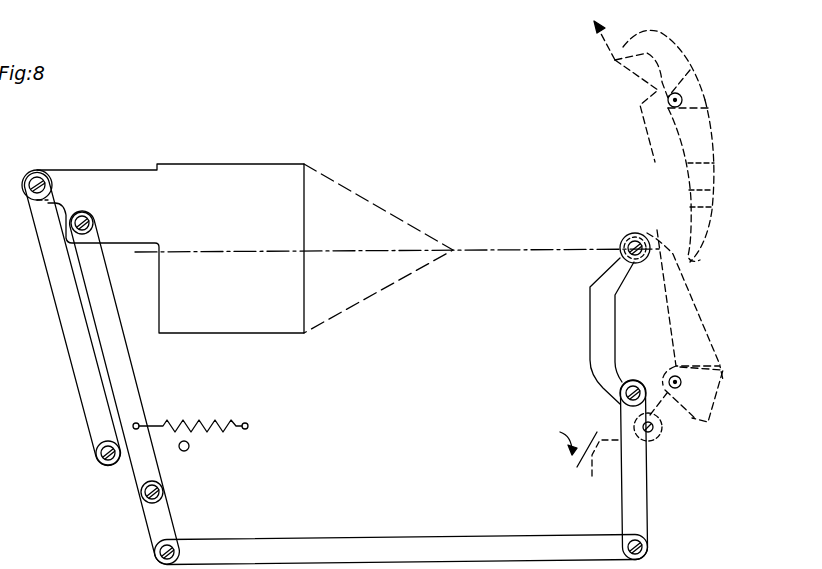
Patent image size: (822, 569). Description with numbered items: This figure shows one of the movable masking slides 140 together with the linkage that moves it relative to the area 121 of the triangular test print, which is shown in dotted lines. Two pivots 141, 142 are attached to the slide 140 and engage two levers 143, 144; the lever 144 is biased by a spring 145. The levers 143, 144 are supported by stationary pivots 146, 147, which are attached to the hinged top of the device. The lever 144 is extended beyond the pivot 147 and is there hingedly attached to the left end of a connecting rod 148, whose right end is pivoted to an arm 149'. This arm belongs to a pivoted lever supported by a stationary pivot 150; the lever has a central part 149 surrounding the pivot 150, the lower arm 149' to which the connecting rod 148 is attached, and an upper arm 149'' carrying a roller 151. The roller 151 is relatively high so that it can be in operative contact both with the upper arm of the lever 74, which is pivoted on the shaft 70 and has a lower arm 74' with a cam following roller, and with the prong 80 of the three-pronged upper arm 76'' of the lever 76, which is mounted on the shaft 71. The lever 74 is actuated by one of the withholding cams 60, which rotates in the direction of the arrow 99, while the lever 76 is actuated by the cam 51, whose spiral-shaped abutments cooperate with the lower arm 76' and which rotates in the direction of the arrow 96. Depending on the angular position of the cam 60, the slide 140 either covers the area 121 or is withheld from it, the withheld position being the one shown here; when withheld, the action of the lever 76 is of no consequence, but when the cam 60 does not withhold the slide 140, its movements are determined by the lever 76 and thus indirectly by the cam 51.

The masking slide 140 is at (262, 170).
The area of the triangular test print 121 is at (370, 200).
The pivot 141 is at (38, 181).
The pivot 142 is at (89, 220).
The lever 143 is at (75, 360).
The lever 144 is at (130, 376).
The spring 145 is at (185, 420).
The stationary pivot 146 is at (97, 453).
The stationary pivot 147 is at (163, 492).
The connecting rod 148 is at (292, 545).
The roller 151 is at (625, 240).
The upper arm 149'' is at (583, 331).
The stationary pivot 150 is at (634, 379).
The central part 149 is at (590, 415).
The lower arm 149' is at (662, 469).
The shaft 70 is at (686, 372).
The lever 74 is at (702, 394).
The lower arm 74' is at (684, 433).
The arrow 99 is at (564, 448).
The withholding cam 60 is at (603, 472).
The arrow 96 is at (607, 48).
The cam 51 is at (645, 135).
The lower arm 76' is at (664, 55).
The lever 76 is at (677, 80).
The shaft 71 is at (684, 100).
The prong 80 is at (705, 233).
The upper arm 76'' is at (724, 185).